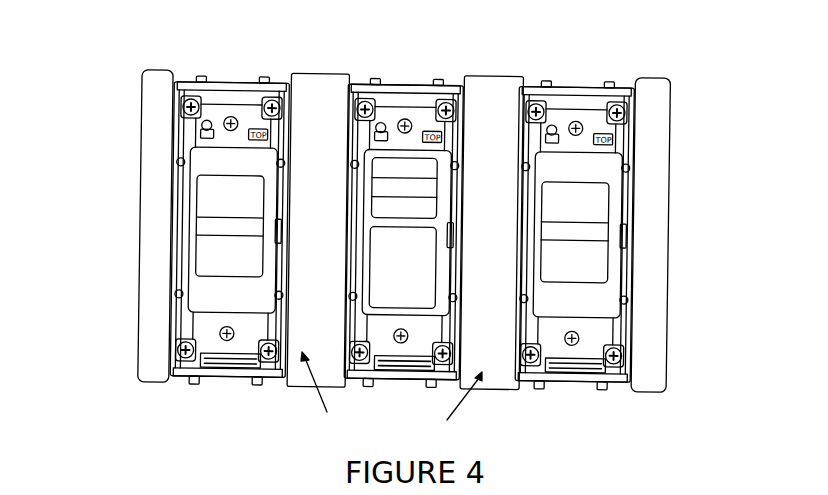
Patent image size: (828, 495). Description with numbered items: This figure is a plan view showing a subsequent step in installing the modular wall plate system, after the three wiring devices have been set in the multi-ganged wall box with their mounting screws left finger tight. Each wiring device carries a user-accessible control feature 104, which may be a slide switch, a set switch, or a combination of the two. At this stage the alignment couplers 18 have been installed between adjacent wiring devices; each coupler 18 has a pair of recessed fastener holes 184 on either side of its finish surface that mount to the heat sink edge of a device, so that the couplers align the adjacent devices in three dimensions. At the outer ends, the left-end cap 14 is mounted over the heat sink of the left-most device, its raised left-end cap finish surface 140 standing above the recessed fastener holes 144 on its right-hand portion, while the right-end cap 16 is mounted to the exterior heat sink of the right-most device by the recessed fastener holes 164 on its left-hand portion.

The left-end cap 14 is at (153, 179).
The right-end cap 16 is at (668, 178).
The alignment coupler 18 is at (315, 72).
The user-accessible control feature 104 is at (249, 208).
The left-end cap finish surface 140 is at (150, 269).
The recessed fastener holes 144 is at (192, 99).
The recessed fastener holes 164 is at (619, 102).
The recessed fastener holes 184 is at (274, 99).